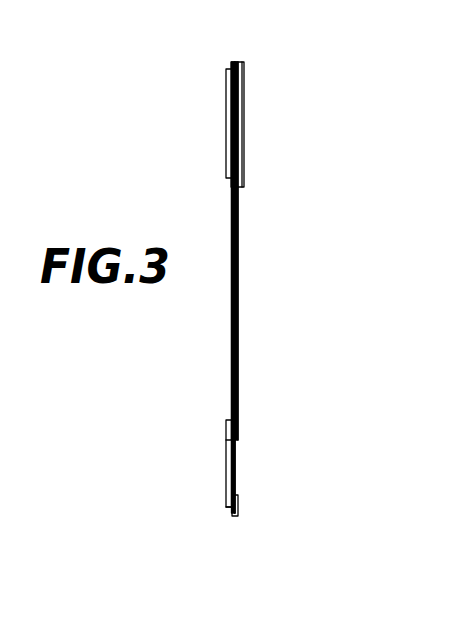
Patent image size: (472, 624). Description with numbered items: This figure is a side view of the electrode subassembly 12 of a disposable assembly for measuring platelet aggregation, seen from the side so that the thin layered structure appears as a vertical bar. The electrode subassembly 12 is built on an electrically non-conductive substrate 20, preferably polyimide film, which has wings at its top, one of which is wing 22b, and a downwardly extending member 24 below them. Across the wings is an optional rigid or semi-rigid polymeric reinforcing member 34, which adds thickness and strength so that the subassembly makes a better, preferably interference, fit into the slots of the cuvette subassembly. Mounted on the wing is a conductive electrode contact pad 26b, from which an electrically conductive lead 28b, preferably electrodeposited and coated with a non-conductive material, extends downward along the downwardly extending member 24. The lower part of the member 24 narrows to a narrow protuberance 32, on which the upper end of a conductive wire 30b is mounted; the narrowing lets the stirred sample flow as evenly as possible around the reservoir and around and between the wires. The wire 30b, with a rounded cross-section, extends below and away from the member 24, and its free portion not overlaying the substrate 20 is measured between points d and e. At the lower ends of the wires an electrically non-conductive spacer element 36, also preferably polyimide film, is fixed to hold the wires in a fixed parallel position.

The electrode subassembly 12 is at (279, 186).
The electrically non-conductive substrate 20 is at (238, 265).
The wing 22b is at (232, 62).
The downwardly extending member 24 is at (238, 320).
The conductive electrode contact pad 26b is at (226, 104).
The electrically conductive lead 28b is at (231, 355).
The conductive wire 30b is at (235, 468).
The lower narrow protuberance 32 is at (238, 402).
The reinforcing member 34 is at (244, 83).
The electrically non-conductive spacer element 36 is at (238, 513).
The point d is at (226, 441).
The point e is at (226, 506).